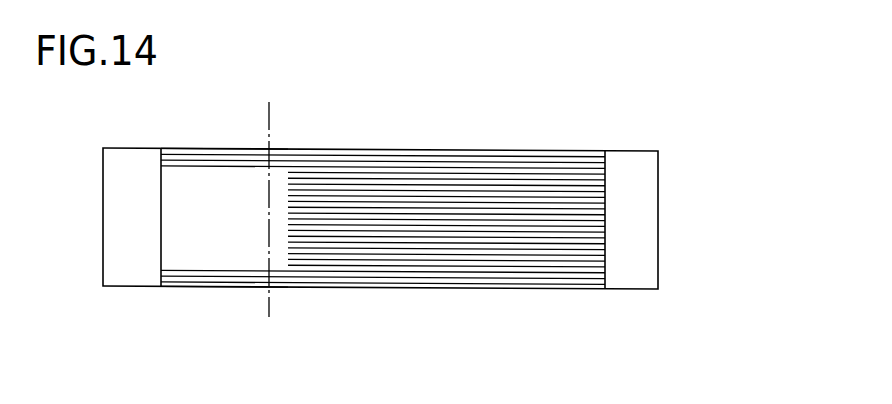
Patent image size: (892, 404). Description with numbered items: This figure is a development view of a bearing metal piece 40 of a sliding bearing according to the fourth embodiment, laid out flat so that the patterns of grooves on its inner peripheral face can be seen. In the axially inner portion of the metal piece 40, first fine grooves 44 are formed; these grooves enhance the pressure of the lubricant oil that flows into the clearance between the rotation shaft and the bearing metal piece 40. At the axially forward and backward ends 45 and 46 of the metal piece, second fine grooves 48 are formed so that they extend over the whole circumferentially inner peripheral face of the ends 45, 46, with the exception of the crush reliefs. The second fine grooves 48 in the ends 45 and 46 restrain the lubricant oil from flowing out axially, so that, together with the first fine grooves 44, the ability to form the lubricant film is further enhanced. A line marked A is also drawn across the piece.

The bearing metal piece 40 is at (680, 150).
The first fine grooves 44 is at (440, 207).
The axially forward end 45 is at (387, 292).
The axially backward end 46 is at (375, 149).
The second fine grooves 48 is at (222, 149).
The section line A is at (272, 130).